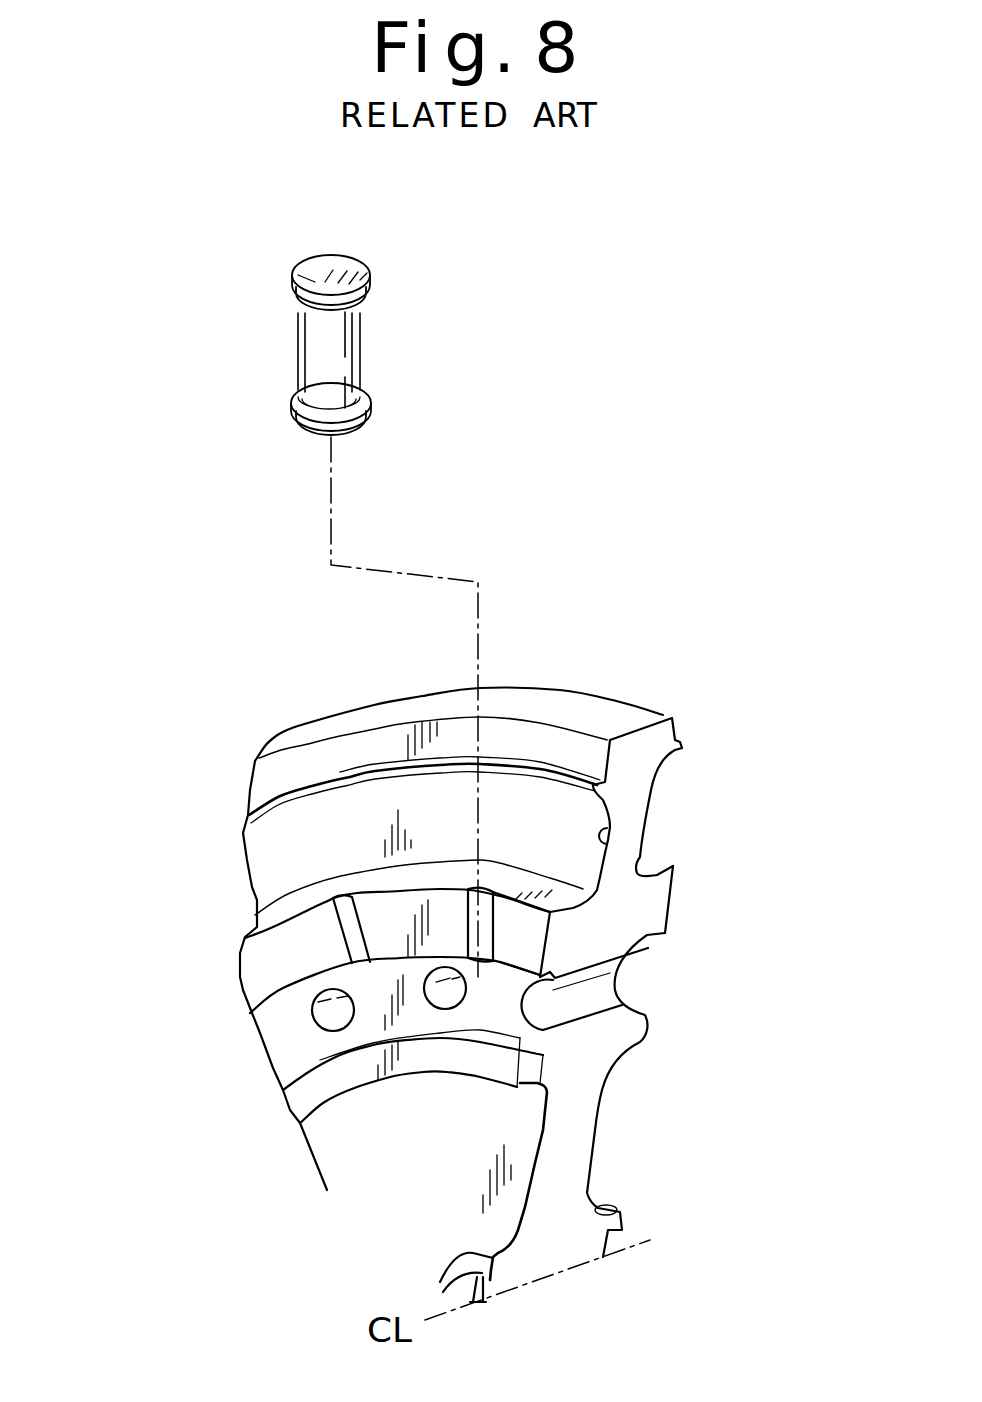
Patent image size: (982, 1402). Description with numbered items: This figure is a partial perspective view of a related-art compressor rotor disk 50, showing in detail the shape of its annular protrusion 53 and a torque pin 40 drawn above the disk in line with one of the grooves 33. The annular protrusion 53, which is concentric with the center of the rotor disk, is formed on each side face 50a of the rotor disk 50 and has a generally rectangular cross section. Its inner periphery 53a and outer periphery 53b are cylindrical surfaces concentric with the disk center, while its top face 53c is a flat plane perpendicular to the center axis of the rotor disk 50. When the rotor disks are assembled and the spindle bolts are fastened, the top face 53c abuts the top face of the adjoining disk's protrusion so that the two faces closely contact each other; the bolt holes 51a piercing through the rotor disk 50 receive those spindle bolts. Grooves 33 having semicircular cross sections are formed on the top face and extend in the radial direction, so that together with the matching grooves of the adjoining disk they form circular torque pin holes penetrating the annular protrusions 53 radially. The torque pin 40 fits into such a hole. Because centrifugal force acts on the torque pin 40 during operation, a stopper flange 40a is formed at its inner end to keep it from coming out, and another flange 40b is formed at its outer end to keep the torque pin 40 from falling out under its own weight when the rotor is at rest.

The torque pin 40 is at (347, 314).
The stopper flange 40a is at (371, 418).
The flange 40b is at (292, 272).
The compressor rotor disk 50 is at (454, 923).
The side face 50a is at (605, 845).
The groove 33 is at (490, 886).
The annular protrusion 53 is at (454, 864).
The inner periphery 53a is at (652, 940).
The outer periphery 53b is at (283, 913).
The top face 53c is at (527, 938).
The bolt hole 51a is at (442, 997).